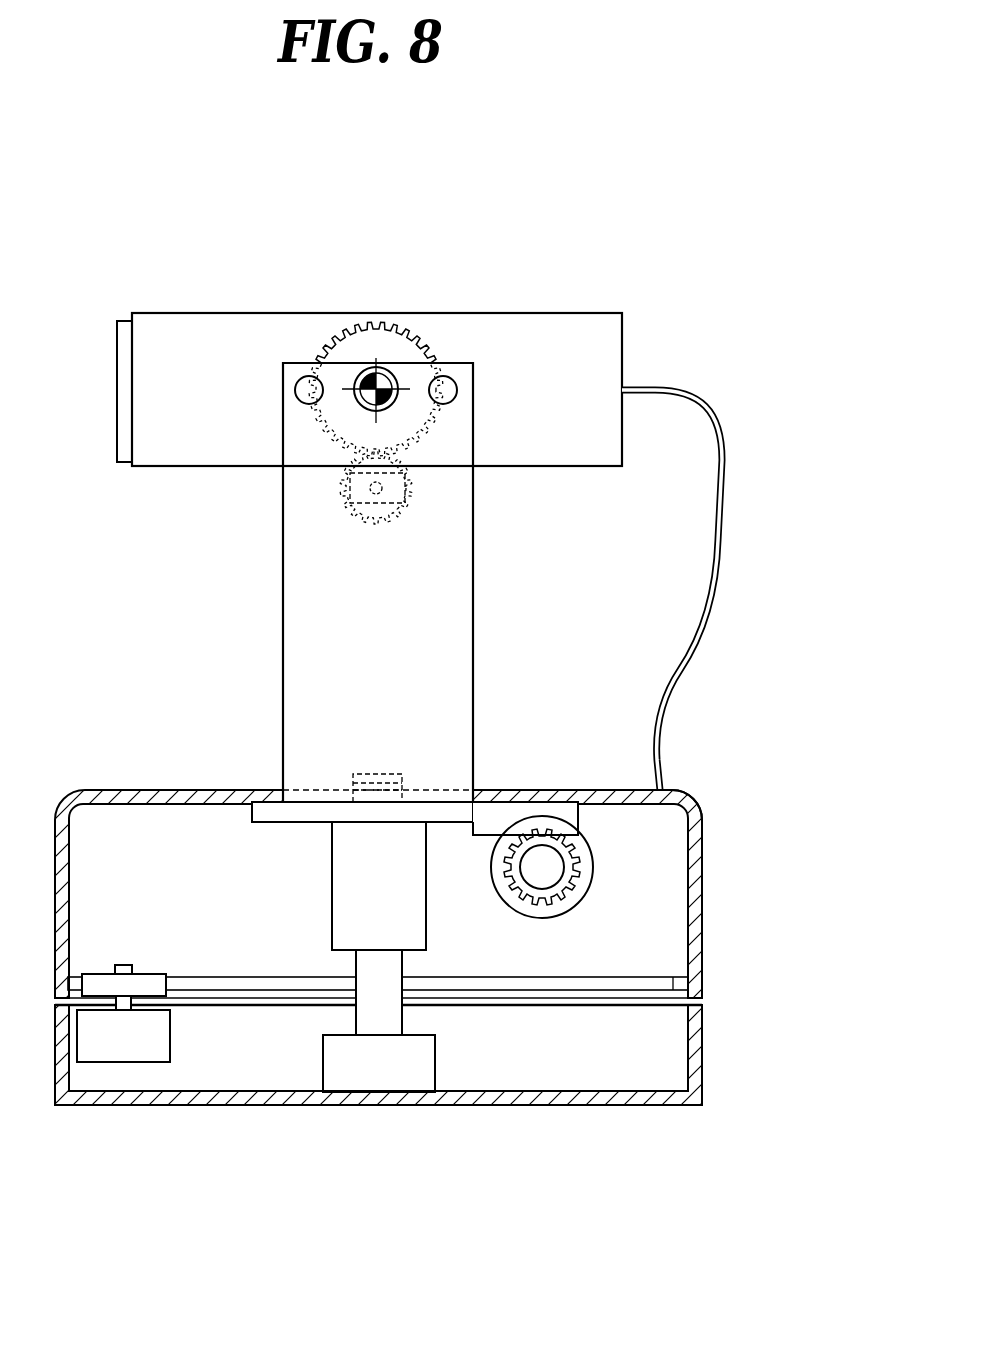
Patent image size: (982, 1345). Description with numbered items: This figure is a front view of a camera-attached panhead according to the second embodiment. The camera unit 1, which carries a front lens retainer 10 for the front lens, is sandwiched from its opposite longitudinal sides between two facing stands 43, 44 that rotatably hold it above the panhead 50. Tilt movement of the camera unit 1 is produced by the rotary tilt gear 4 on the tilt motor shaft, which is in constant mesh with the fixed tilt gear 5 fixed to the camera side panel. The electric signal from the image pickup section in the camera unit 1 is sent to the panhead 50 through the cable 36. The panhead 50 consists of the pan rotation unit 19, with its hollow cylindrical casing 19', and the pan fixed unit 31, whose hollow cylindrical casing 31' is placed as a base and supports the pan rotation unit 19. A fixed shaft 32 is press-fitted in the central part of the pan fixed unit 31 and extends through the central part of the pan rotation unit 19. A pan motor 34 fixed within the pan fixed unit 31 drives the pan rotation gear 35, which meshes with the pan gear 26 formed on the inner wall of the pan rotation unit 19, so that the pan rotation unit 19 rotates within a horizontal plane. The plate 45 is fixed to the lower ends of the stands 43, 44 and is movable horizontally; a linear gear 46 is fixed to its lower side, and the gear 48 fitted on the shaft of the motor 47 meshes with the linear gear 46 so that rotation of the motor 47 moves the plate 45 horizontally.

The camera unit 1 is at (242, 313).
The front lens retainer 10 is at (122, 318).
The fixed tilt gear 5 is at (403, 320).
The rotary tilt gear 4 is at (347, 505).
The stand 43 is at (441, 582).
The stand 44 is at (460, 575).
The cable 36 is at (715, 591).
The pan rotation unit 19 is at (433, 895).
The hollow cylindrical casing 19' is at (722, 796).
The plate 45 is at (267, 813).
The linear gear 46 is at (517, 830).
The gear 48 is at (590, 842).
The motor 47 is at (580, 902).
The pan rotation gear 35 is at (97, 985).
The pan motor 34 is at (130, 1047).
The fixed shaft 32 is at (383, 1017).
The pan gear 26 is at (563, 982).
The pan fixed unit 31 is at (433, 1055).
The hollow cylindrical casing 31' is at (430, 1101).
The panhead 50 is at (810, 970).